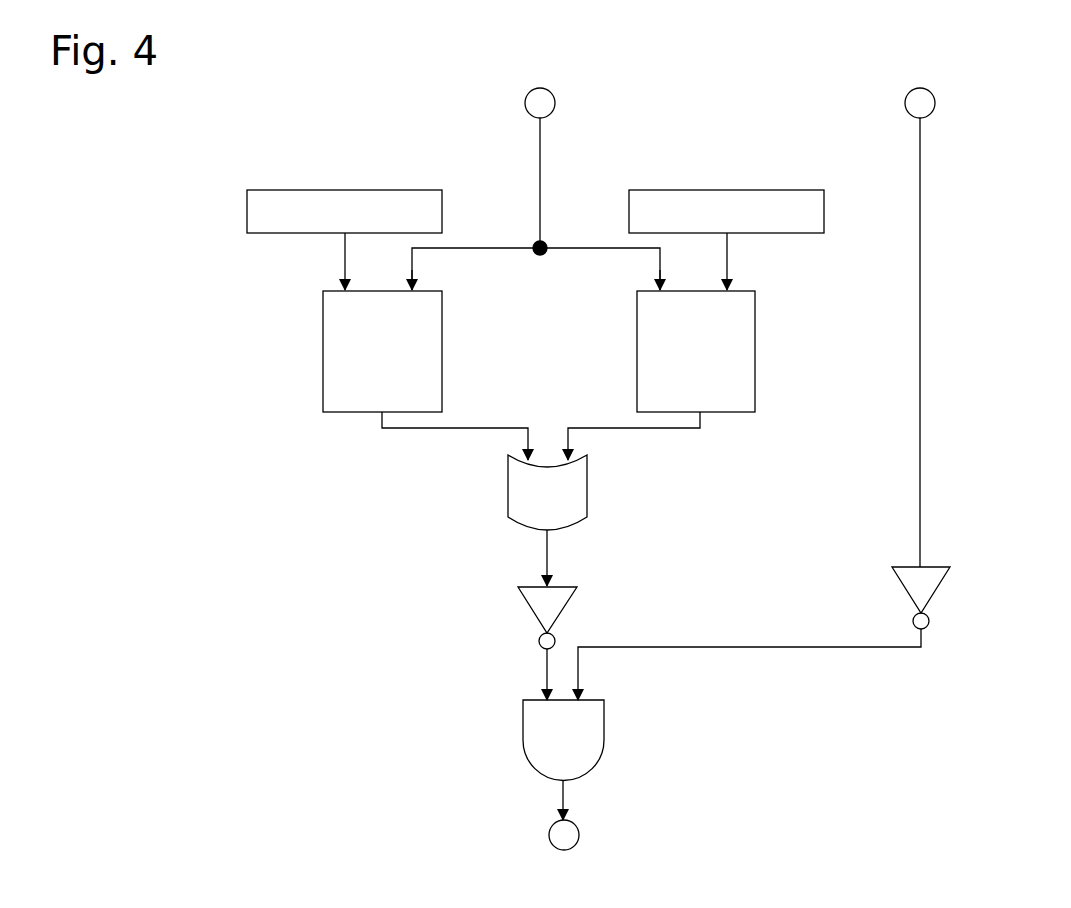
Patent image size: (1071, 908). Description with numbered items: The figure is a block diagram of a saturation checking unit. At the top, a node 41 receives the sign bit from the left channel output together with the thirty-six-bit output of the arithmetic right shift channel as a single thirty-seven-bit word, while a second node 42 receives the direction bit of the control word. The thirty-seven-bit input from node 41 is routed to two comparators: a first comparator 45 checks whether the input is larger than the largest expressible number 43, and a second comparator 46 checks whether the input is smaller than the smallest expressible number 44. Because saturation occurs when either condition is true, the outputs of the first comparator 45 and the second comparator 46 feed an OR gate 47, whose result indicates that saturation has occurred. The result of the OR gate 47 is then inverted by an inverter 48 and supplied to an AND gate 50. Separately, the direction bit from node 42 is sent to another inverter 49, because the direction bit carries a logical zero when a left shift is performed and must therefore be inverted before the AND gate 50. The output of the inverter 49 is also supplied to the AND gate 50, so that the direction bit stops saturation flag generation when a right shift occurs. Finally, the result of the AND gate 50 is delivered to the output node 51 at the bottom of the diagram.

The node 41 is at (518, 103).
The node 42 is at (898, 103).
The largest expressible number 43 is at (237, 213).
The smallest expressible number 44 is at (837, 220).
The first comparator 45 is at (310, 380).
The second comparator 46 is at (768, 395).
The OR gate 47 is at (495, 501).
The inverter 48 is at (515, 618).
The inverter 49 is at (892, 582).
The AND gate 50 is at (518, 750).
The output node 51 is at (542, 837).